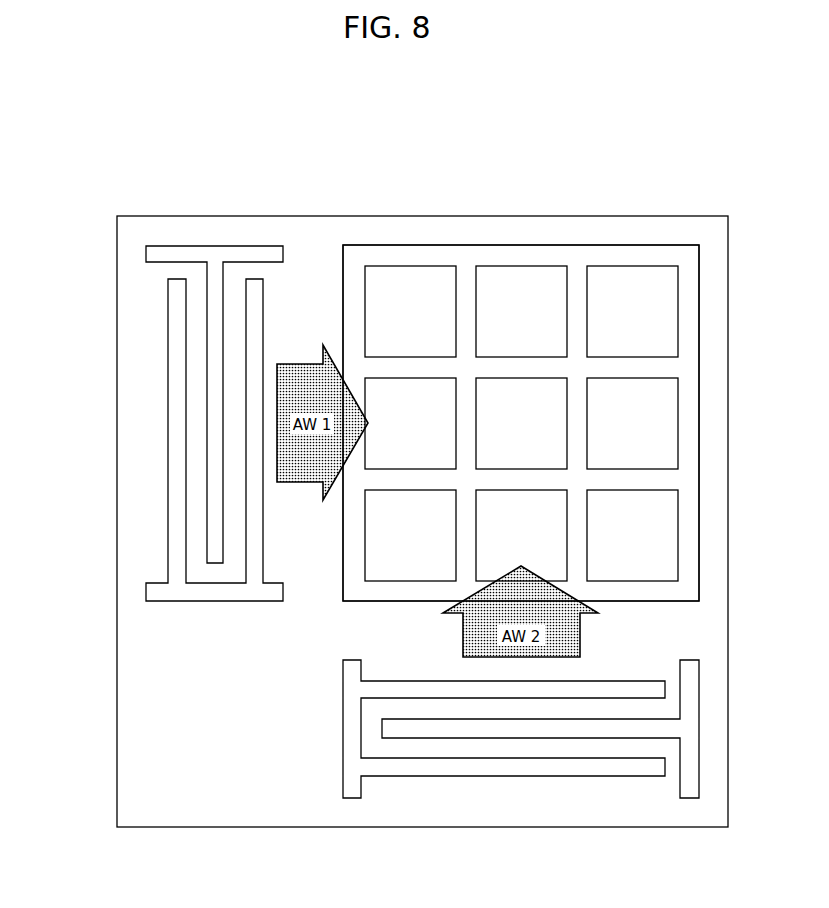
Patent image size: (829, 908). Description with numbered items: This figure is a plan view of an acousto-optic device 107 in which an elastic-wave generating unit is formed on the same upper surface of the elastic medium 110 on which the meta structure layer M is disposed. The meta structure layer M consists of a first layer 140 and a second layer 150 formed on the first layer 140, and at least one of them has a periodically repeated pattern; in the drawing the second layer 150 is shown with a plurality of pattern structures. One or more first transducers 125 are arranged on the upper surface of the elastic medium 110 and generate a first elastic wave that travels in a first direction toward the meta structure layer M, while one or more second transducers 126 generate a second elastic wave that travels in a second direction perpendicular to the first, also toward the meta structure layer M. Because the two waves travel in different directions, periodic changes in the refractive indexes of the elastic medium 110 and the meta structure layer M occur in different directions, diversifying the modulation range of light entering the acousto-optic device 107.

The acousto-optic device 107 is at (669, 165).
The elastic medium 110 is at (465, 227).
The first transducer 125 is at (157, 445).
The second transducer 126 is at (513, 787).
The first layer 140 is at (529, 245).
The second layer 150 is at (573, 263).
The meta structure layer M is at (615, 173).